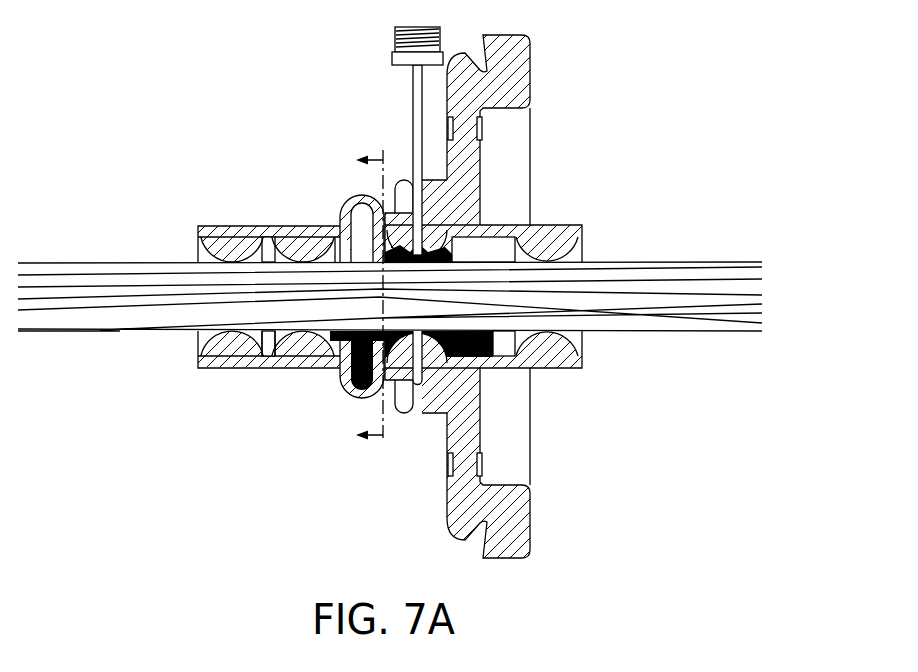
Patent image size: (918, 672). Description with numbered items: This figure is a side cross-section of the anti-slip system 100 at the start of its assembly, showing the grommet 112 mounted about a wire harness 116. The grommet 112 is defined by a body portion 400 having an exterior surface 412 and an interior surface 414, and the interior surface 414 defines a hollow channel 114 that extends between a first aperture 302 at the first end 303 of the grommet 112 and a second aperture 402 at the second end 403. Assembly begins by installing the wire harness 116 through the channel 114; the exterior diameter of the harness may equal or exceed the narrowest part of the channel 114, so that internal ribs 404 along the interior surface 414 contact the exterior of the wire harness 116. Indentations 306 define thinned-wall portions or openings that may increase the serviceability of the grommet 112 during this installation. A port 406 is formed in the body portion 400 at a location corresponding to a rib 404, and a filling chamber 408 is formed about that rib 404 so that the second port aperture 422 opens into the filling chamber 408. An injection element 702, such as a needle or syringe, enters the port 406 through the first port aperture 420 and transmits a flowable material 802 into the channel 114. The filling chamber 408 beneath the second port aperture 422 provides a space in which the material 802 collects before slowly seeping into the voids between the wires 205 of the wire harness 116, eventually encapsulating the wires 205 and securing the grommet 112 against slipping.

The anti-slip system 100 is at (730, 50).
The grommet 112 is at (571, 40).
The channel 114 is at (268, 369).
The wire harness 116 is at (78, 324).
The wires 205 is at (88, 262).
The first aperture 302 is at (194, 248).
The first end 303 is at (242, 429).
The indentations 306 is at (447, 460).
The body portion 400 is at (268, 110).
The second aperture 402 is at (600, 247).
The second end 403 is at (599, 394).
The internal ribs 404 is at (295, 232).
The port 406 is at (427, 197).
The filling chamber 408 is at (358, 196).
The exterior surface 412 is at (223, 369).
The interior surface 414 is at (463, 358).
The first port aperture 420 is at (414, 148).
The second port aperture 422 is at (443, 233).
The injection element 702 is at (396, 36).
The material 802 is at (350, 398).